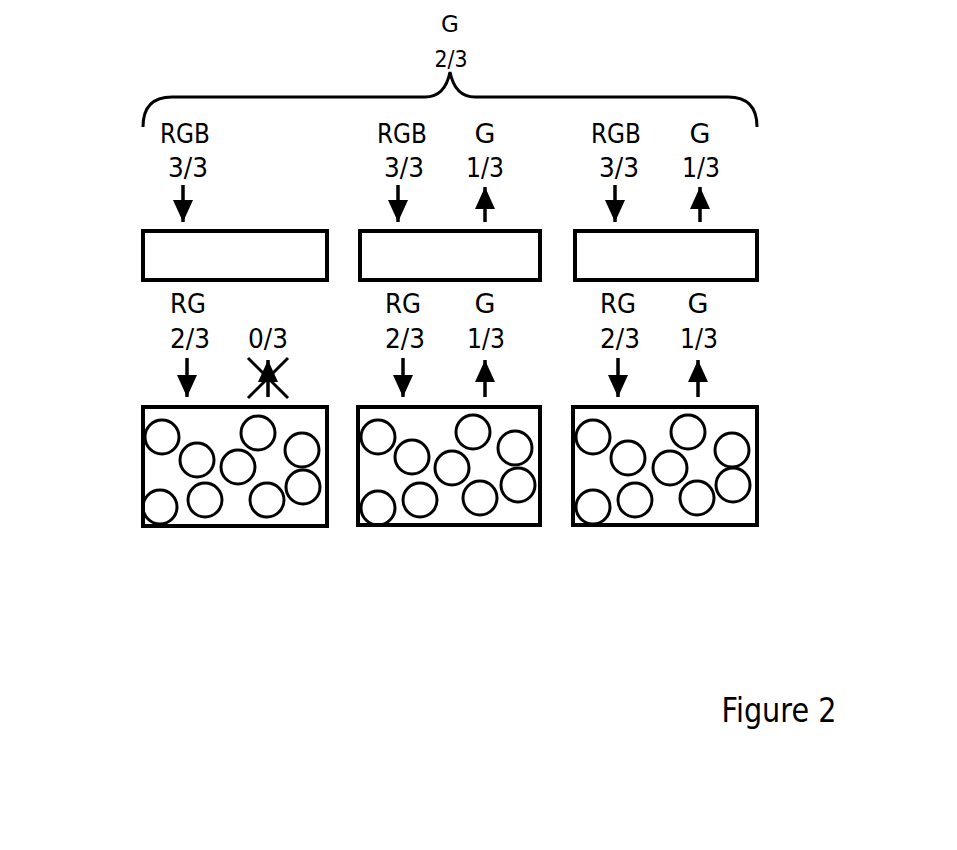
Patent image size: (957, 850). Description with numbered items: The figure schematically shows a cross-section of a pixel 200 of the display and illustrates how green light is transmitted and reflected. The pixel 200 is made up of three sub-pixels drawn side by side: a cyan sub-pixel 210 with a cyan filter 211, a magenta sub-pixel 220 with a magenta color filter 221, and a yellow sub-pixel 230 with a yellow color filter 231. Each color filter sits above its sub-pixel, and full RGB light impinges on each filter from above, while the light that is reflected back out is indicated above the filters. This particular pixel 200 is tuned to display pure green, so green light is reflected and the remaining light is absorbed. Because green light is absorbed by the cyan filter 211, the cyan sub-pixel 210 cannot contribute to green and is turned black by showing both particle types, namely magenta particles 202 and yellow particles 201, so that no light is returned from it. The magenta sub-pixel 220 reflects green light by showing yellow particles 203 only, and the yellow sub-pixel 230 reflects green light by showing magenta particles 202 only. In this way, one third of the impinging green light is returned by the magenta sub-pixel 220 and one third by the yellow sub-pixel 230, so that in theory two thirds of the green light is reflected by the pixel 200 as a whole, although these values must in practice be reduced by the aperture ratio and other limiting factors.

The pixel 200 is at (366, 627).
The yellow particles 201 is at (147, 510).
The magenta particles 202 is at (147, 430).
The yellow particles 203 is at (363, 524).
The cyan sub-pixel 210 is at (187, 519).
The cyan filter 211 is at (167, 258).
The magenta sub-pixel 220 is at (443, 518).
The magenta color filter 221 is at (378, 253).
The yellow sub-pixel 230 is at (680, 538).
The yellow color filter 231 is at (737, 260).